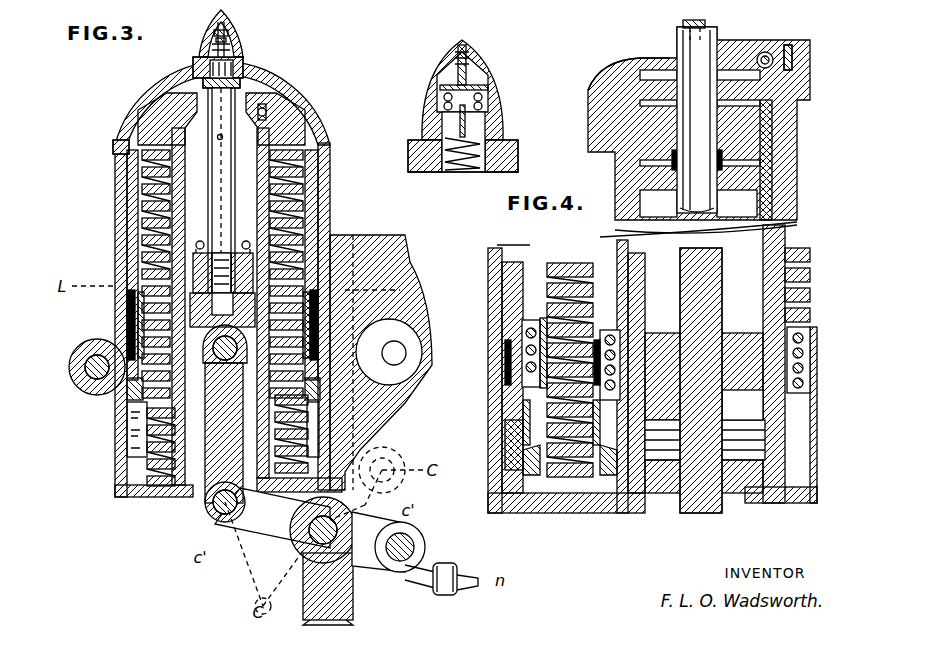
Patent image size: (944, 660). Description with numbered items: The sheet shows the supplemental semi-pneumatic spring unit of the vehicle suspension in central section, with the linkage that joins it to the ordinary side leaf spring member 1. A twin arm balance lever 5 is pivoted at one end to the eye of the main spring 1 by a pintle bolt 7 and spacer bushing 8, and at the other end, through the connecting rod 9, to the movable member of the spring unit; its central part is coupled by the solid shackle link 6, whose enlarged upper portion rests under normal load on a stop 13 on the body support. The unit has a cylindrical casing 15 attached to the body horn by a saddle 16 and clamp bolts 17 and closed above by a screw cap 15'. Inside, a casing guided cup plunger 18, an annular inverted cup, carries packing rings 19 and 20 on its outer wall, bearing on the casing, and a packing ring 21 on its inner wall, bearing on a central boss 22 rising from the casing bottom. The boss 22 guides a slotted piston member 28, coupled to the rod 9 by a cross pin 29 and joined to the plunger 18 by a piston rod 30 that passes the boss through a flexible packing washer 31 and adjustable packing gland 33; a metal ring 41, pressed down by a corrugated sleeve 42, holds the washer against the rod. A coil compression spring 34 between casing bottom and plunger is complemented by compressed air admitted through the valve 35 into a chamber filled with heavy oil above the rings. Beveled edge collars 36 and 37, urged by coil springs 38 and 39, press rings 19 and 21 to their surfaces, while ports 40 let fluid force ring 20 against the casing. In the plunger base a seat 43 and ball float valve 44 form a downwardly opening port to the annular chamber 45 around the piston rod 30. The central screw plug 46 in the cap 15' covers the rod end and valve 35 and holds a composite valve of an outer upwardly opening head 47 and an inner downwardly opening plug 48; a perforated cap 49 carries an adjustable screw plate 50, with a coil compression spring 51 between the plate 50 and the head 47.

In FIG. 3, the side leaf spring member 1 is at (462, 572).
In FIG. 3, the twin arm balance lever 5 is at (265, 520).
In FIG. 3, the solid shackle link 6 is at (345, 590).
In FIG. 3, the pintle bolt 7 is at (405, 540).
In FIG. 3, the spacer bushing 8 is at (422, 547).
In FIG. 3, the connecting rod 9 is at (207, 515).
In FIG. 4, the connecting rod 9 is at (704, 505).
In FIG. 3, the stop 13 is at (385, 490).
In FIG. 3, the cylindrical casing 15 is at (199, 320).
In FIG. 3, the screw cap 15' is at (96, 140).
In FIG. 4, the screw cap 15' is at (461, 187).
In FIG. 3, the saddle 16 is at (397, 252).
In FIG. 3, the clamp bolts 17 is at (395, 343).
In FIG. 3, the cup plunger 18 is at (130, 241).
In FIG. 4, the cup plunger 18 is at (785, 175).
In FIG. 3, the packing ring 19 is at (90, 343).
In FIG. 4, the packing ring 19 is at (522, 470).
In FIG. 3, the packing ring 20 is at (127, 320).
In FIG. 4, the packing ring 20 is at (522, 385).
In FIG. 3, the packing ring 21 is at (135, 395).
In FIG. 4, the packing ring 21 is at (630, 482).
In FIG. 3, the central boss 22 is at (147, 412).
In FIG. 4, the central boss 22 is at (797, 224).
In FIG. 3, the slotted piston member 28 is at (150, 287).
In FIG. 4, the slotted piston member 28 is at (760, 490).
In FIG. 4, the cross pin 29 is at (667, 470).
In FIG. 3, the piston rod 30 is at (140, 122).
In FIG. 4, the piston rod 30 is at (677, 46).
In FIG. 3, the flexible packing washer 31 is at (320, 198).
In FIG. 4, the flexible packing washer 31 is at (625, 106).
In FIG. 3, the adjustable packing gland 33 is at (300, 247).
In FIG. 4, the adjustable packing gland 33 is at (625, 140).
In FIG. 3, the coil compression spring 34 is at (150, 447).
In FIG. 4, the coil compression spring 34 is at (566, 266).
In FIG. 3, the valve 35 is at (200, 72).
In FIG. 4, the valve 35 is at (688, 25).
In FIG. 4, the beveled edge collar 36 is at (535, 480).
In FIG. 4, the beveled edge collar 37 is at (612, 482).
In FIG. 4, the compressed coil spring 38 is at (530, 335).
In FIG. 4, the compressed coil spring 39 is at (620, 340).
In FIG. 4, the ports 40 is at (528, 360).
In FIG. 4, the metal ring 41 is at (610, 66).
In FIG. 4, the corrugated sleeve 42 is at (625, 90).
In FIG. 4, the seat 43 is at (760, 52).
In FIG. 3, the ball float valve 44 is at (266, 112).
In FIG. 4, the ball float valve 44 is at (785, 45).
In FIG. 3, the annular chamber 45 is at (219, 140).
In FIG. 4, the annular chamber 45 is at (632, 60).
In FIG. 3, the central screw plug 46 is at (243, 62).
In FIG. 4, the central screw plug 46 is at (408, 145).
In FIG. 4, the outer valve head 47 is at (436, 110).
In FIG. 4, the inner spring supported plug 48 is at (462, 172).
In FIG. 3, the perforated cap 49 is at (232, 30).
In FIG. 4, the perforated cap 49 is at (440, 52).
In FIG. 4, the adjustable screw plate 50 is at (440, 86).
In FIG. 3, the coil compression spring 51 is at (208, 40).
In FIG. 4, the coil compression spring 51 is at (488, 92).